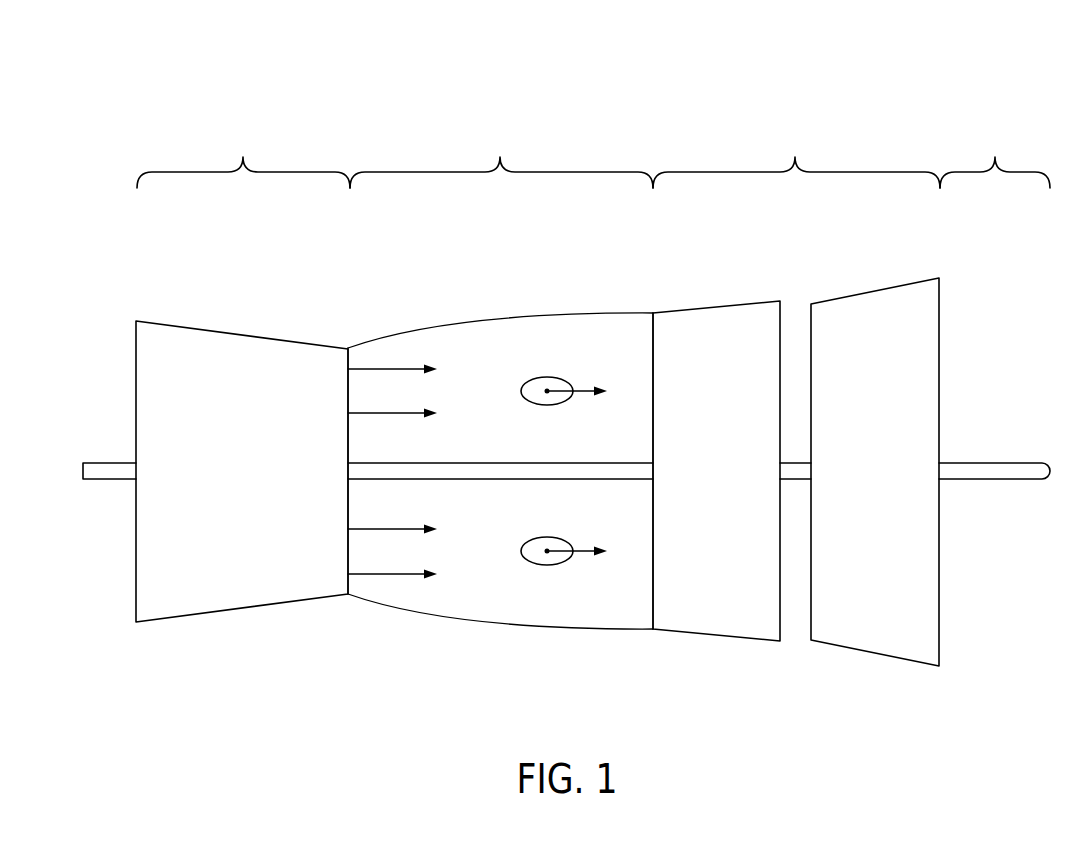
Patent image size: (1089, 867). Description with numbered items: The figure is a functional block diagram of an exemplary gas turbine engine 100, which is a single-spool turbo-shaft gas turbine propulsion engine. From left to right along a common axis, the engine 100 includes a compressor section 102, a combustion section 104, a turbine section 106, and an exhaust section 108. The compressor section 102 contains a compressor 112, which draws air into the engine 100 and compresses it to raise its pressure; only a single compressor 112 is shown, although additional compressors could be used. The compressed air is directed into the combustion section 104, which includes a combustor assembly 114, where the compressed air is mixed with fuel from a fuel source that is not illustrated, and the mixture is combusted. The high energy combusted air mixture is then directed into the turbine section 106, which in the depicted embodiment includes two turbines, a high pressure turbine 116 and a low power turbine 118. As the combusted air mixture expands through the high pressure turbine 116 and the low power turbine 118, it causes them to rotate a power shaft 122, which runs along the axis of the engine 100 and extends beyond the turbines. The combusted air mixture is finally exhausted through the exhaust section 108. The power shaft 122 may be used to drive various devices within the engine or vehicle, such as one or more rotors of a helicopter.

The gas turbine engine 100 is at (631, 104).
The compressor section 102 is at (243, 158).
The combustion section 104 is at (500, 378).
The turbine section 106 is at (796, 158).
The exhaust section 108 is at (995, 158).
The compressor 112 is at (228, 598).
The combustor assembly 114 is at (533, 380).
The high pressure turbine 116 is at (712, 624).
The low power turbine 118 is at (874, 641).
The power shaft 122 is at (995, 462).